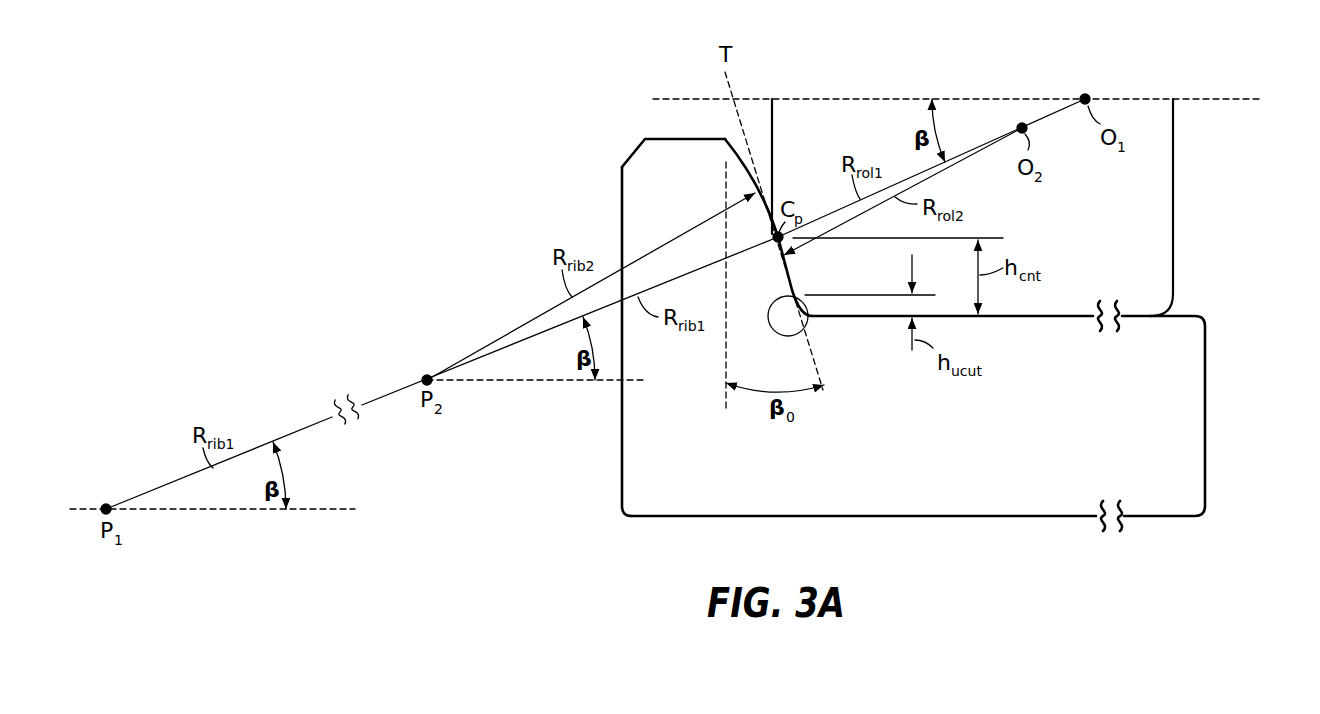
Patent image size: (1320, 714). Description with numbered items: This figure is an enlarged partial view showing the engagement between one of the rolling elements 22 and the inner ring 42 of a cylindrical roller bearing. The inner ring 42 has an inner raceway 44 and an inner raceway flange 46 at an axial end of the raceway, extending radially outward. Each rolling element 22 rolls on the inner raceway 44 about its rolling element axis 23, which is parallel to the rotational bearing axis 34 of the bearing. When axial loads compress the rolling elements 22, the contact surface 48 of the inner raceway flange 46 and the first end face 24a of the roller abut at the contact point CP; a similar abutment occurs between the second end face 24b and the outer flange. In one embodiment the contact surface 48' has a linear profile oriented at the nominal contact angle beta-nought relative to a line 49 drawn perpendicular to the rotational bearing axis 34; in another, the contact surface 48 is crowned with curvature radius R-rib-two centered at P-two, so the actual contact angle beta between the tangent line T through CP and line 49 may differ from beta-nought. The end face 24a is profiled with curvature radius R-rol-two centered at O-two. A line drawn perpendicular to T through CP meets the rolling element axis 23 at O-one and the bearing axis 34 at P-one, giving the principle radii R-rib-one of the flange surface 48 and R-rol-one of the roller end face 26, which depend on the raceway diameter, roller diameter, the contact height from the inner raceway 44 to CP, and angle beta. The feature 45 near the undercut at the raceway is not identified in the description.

The rolling elements 22 is at (1075, 285).
The rolling element axis 23 is at (1218, 102).
The first end face 24a is at (773, 137).
The second end face 24b is at (1173, 190).
The roller end face 26 is at (797, 287).
The rotational bearing axis 34 is at (312, 517).
The inner ring 42 is at (622, 458).
The inner raceway 44 is at (1008, 317).
The undercut radius 45 is at (807, 320).
The inner raceway flange 46 is at (657, 157).
The contact surface 48 is at (716, 147).
The contact surface 48' is at (591, 278).
The line perpendicular to the rotational bearing axis 49 is at (726, 370).